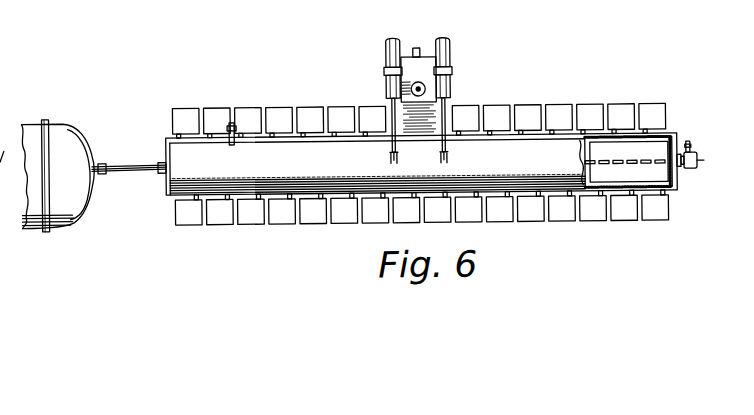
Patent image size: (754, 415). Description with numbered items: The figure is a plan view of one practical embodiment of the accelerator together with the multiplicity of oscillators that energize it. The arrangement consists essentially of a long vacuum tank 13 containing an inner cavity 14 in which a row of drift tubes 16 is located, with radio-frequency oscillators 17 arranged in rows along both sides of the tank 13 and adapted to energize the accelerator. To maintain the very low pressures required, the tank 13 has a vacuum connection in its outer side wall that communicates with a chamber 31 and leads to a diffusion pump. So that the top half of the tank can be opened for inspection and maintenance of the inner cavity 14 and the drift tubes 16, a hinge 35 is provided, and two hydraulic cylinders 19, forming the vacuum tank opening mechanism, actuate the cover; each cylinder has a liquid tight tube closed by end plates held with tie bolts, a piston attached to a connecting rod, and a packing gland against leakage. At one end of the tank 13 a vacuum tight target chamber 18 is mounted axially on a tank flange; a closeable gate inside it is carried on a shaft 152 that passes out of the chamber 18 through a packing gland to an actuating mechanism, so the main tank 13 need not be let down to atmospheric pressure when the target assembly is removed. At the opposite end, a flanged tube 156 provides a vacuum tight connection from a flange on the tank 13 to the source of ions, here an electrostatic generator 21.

The vacuum tank 13 is at (166, 190).
The inner cavity 14 is at (672, 140).
The drift tubes 16 is at (576, 162).
The radio-frequency oscillators 17 is at (253, 108).
The target chamber 18 is at (698, 172).
The hydraulic cylinders 19 is at (387, 52).
The electrostatic generator 21 is at (80, 130).
The chamber 31 is at (423, 62).
The hinge 35 is at (228, 130).
The shaft 152 is at (690, 150).
The flanged tube 156 is at (129, 186).